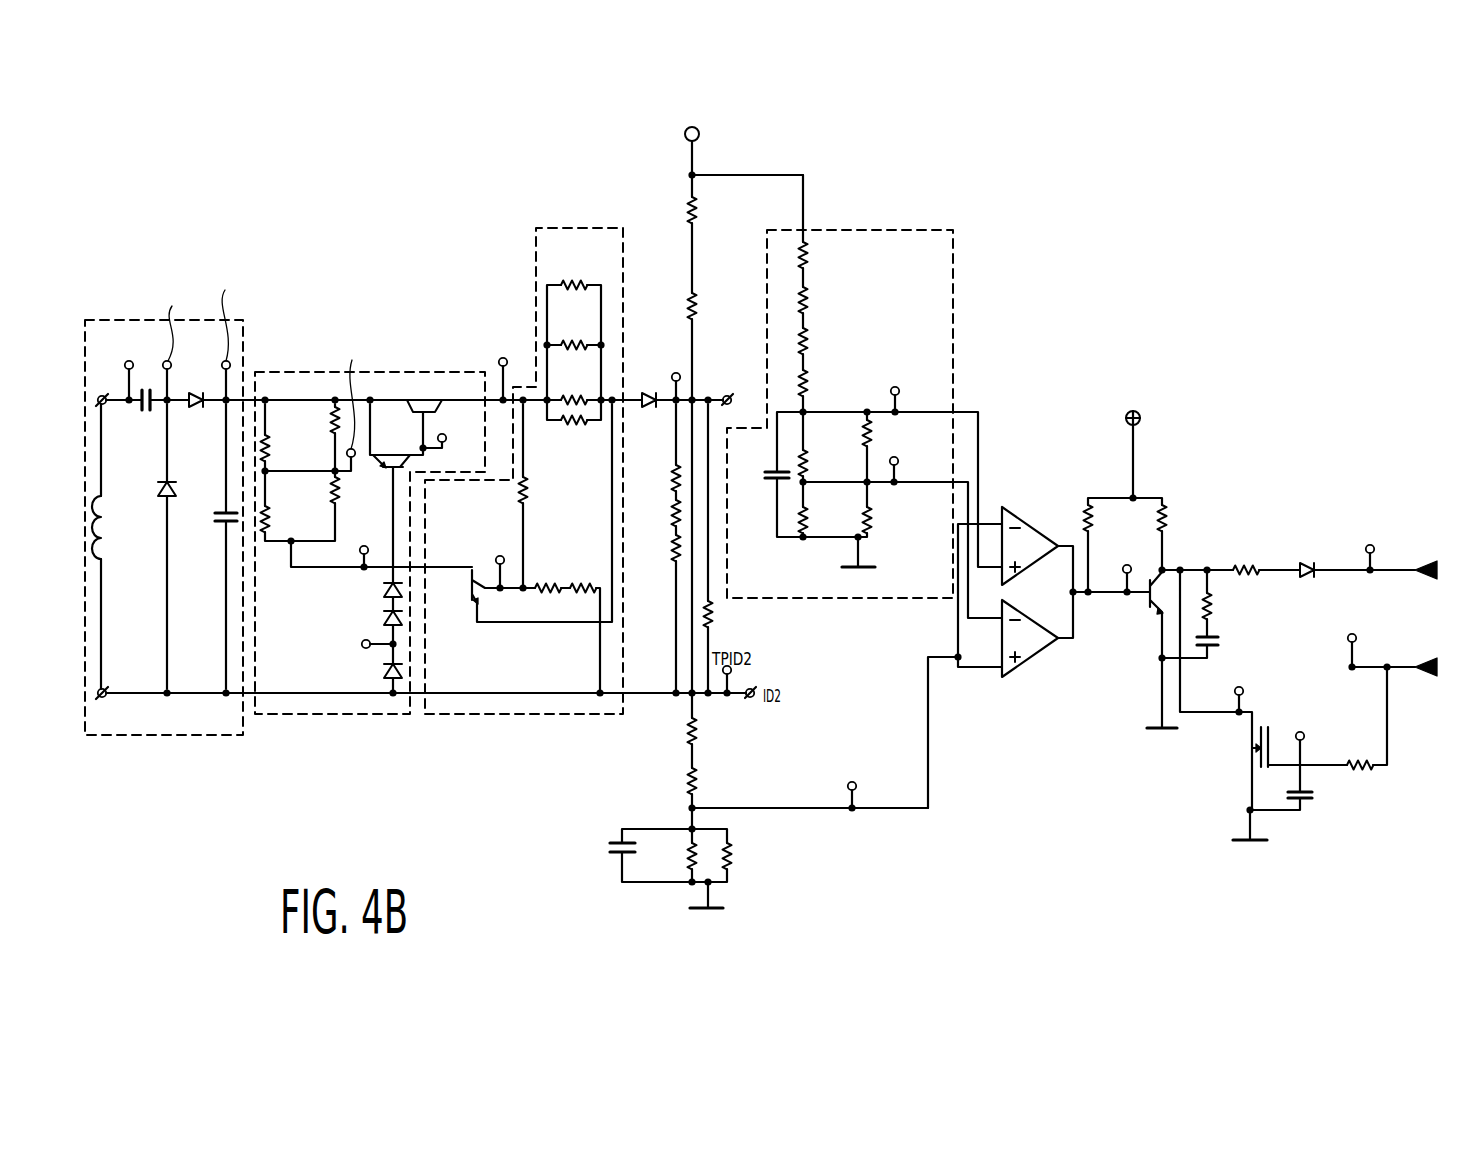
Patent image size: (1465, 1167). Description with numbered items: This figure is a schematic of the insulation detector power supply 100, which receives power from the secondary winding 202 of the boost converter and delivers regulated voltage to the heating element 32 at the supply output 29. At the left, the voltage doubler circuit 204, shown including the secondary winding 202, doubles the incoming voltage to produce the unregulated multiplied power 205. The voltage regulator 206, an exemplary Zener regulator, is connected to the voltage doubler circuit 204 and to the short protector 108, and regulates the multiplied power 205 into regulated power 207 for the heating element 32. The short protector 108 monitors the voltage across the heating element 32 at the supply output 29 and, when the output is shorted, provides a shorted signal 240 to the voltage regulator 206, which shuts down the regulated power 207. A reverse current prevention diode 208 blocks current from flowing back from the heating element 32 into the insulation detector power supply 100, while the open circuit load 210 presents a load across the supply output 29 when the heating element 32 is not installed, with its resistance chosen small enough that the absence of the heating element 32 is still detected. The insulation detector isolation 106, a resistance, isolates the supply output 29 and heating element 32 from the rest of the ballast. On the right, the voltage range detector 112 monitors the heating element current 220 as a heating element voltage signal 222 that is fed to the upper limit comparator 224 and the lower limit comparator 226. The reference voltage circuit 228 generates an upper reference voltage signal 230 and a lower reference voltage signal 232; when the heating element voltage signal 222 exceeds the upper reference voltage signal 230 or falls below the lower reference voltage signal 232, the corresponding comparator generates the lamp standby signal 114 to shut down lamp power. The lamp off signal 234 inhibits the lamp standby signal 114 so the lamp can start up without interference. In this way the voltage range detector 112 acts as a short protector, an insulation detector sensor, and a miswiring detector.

The insulation detector power supply 100 is at (468, 194).
The voltage range detector 112 is at (1057, 266).
The voltage doubler circuit 204 is at (130, 327).
The multiplied power 205 is at (254, 392).
The voltage regulator 206 is at (288, 714).
The regulated power 207 is at (488, 390).
The reverse current prevention diode 208 is at (642, 388).
The insulation detector isolation 106 is at (702, 276).
The reference voltage circuit 228 is at (940, 256).
The lower reference voltage signal 232 is at (970, 425).
The upper reference voltage signal 230 is at (980, 450).
The upper limit comparator 224 is at (1057, 522).
The lower limit comparator 226 is at (1047, 652).
The supply output 29 is at (730, 396).
The heating element 32 is at (715, 612).
The open circuit load 210 is at (661, 578).
The heating element current 220 is at (693, 758).
The heating element voltage signal 222 is at (928, 772).
The secondary winding 202 is at (110, 556).
The shorted signal 240 is at (418, 540).
The short protector 108 is at (512, 714).
The lamp standby signal 114 is at (1397, 570).
The lamp off signal 234 is at (1408, 675).